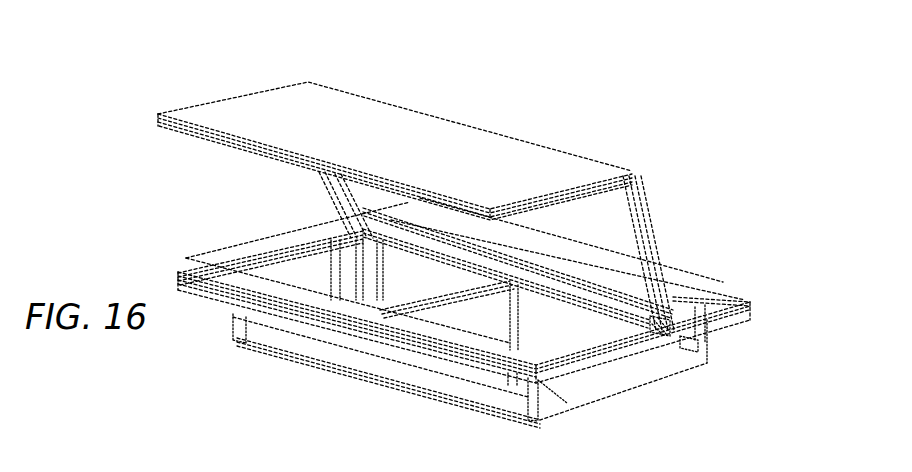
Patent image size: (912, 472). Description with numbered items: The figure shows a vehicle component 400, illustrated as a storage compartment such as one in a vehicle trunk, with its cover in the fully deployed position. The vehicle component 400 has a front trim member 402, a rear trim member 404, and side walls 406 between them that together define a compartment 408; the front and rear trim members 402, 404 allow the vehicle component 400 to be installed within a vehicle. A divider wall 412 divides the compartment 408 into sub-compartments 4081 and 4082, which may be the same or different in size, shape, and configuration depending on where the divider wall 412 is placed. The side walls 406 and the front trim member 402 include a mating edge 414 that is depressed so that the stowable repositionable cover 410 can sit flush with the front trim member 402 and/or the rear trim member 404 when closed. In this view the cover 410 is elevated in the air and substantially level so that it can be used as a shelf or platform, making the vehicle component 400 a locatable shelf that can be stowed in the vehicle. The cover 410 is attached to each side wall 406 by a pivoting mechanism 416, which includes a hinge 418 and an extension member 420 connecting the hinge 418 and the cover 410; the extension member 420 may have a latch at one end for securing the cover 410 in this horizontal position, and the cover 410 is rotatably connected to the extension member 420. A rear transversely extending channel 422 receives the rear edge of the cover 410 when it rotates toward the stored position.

The vehicle component 400 is at (519, 116).
The front trim member 402 is at (210, 272).
The rear trim member 404 is at (577, 262).
The side walls 406 is at (593, 373).
The compartment 408 is at (343, 385).
The sub-compartment 4081 is at (260, 322).
The sub-compartment 4082 is at (478, 381).
The stowable repositionable cover 410 is at (282, 112).
The divider wall 412 is at (443, 311).
The mating edge 414 is at (250, 272).
The pivoting mechanism 416 is at (690, 281).
The hinge 418 is at (661, 327).
The extension member 420 is at (644, 232).
The rear transversely extending channel 422 is at (689, 344).